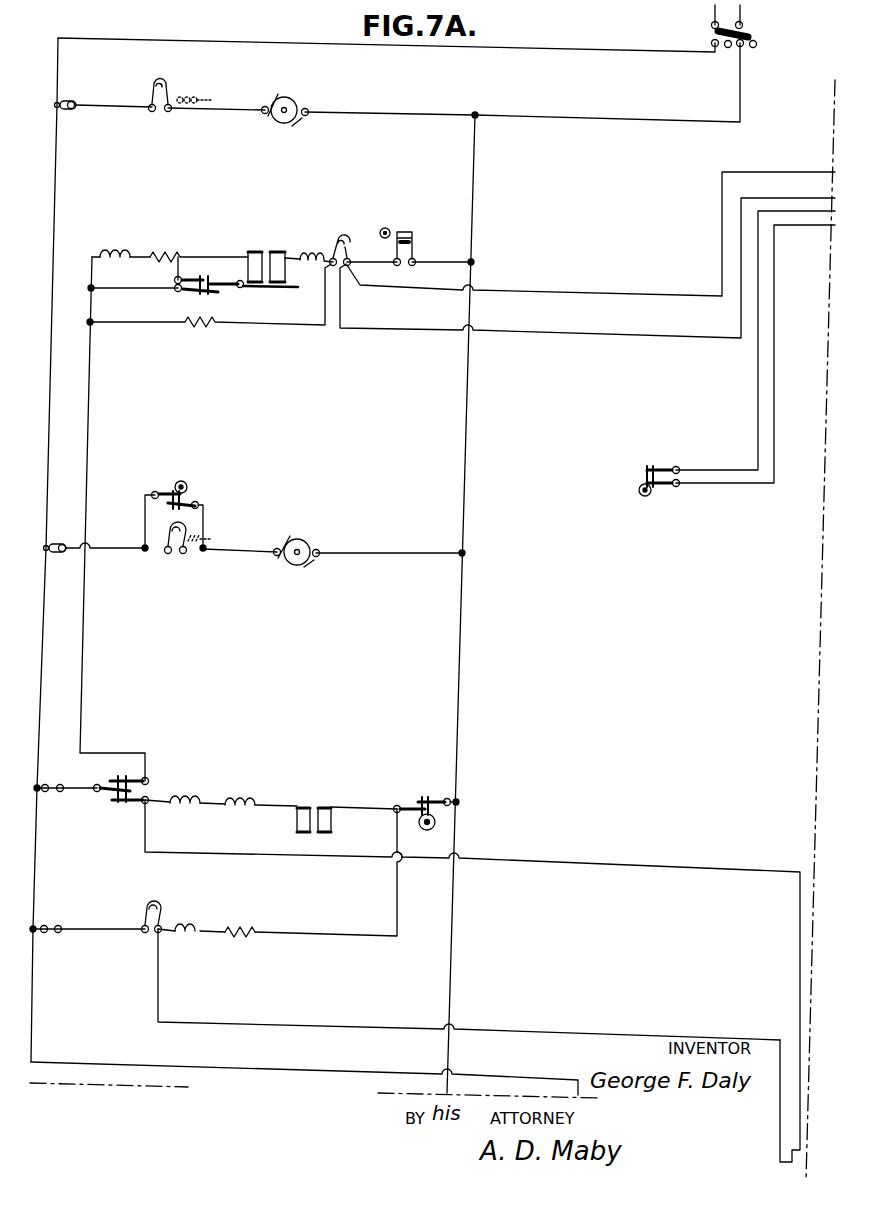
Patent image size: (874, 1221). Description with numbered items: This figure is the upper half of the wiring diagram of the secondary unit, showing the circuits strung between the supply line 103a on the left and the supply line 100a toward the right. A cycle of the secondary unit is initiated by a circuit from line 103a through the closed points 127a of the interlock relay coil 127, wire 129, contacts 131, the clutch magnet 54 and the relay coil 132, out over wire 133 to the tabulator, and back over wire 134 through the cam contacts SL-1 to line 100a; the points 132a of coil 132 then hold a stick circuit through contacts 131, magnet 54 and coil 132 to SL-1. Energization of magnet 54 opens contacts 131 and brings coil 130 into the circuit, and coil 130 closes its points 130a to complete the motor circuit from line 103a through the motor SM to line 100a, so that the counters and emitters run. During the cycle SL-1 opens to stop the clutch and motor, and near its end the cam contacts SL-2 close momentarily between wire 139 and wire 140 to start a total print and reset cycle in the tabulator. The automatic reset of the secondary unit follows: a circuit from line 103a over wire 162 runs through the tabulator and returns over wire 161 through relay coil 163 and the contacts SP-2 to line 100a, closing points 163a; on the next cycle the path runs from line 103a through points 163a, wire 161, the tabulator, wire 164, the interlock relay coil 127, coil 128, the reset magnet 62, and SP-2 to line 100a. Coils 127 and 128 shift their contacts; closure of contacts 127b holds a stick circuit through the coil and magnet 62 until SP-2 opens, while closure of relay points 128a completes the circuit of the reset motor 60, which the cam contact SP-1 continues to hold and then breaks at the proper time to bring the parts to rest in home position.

The line 103a is at (58, 178).
The line 100a is at (475, 166).
The points 130a is at (170, 89).
The coil 130 is at (118, 252).
The motor SM is at (280, 128).
The wire 129 is at (86, 443).
The contacts 131 is at (172, 297).
The clutch magnet 54 is at (268, 250).
The relay coil 132 is at (308, 252).
The points 132a is at (352, 240).
The cam contacts SL-1 is at (408, 228).
The wire 134 is at (606, 296).
The wire 133 is at (541, 332).
The wire 139 is at (757, 401).
The wire 140 is at (774, 385).
The cam contacts SL-2 is at (637, 472).
The cam contact SP-1 is at (188, 498).
The relay points 128a is at (176, 560).
The coil 128 is at (244, 797).
The reset motor 60 is at (292, 566).
The points 127a is at (106, 784).
The contacts 127b is at (110, 806).
The interlock relay coil 127 is at (182, 797).
The reset magnet 62 is at (330, 815).
The cam contacts SP-2 is at (416, 800).
The wire 164 is at (665, 869).
The relay points 163a is at (165, 912).
The relay coil 163 is at (192, 940).
The wire 161 is at (633, 1031).
The wire 162 is at (218, 1072).